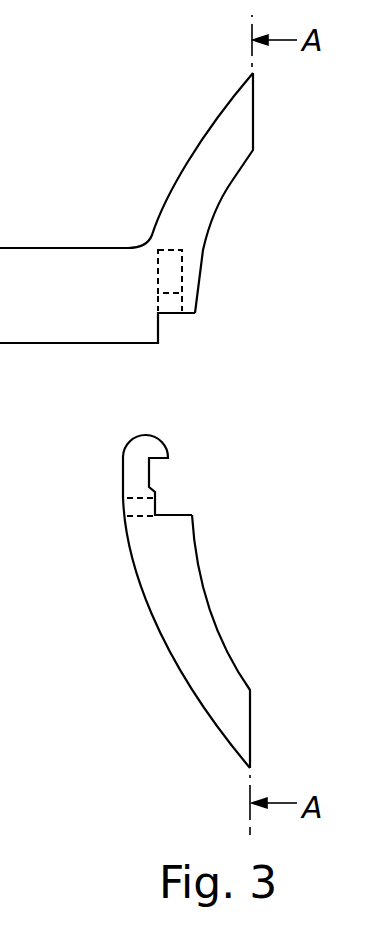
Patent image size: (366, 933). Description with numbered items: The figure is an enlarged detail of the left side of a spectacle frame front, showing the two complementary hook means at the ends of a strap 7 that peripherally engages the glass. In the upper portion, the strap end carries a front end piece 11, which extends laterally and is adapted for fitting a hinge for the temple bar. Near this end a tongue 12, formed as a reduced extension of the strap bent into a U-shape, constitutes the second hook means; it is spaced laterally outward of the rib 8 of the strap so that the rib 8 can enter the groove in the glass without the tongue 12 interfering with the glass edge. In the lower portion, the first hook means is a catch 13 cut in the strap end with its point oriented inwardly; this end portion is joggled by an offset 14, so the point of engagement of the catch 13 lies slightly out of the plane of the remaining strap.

The strap 7 is at (203, 136).
The rib 8 is at (222, 208).
The front end piece 11 is at (48, 248).
The tongue 12 is at (182, 265).
The catch 13 is at (158, 458).
The offset 14 is at (128, 503).